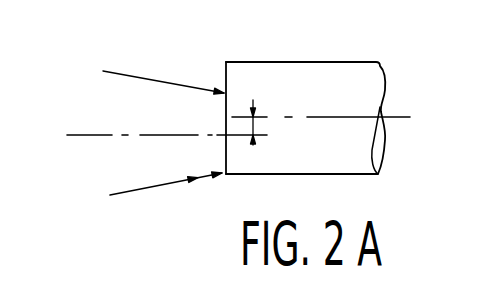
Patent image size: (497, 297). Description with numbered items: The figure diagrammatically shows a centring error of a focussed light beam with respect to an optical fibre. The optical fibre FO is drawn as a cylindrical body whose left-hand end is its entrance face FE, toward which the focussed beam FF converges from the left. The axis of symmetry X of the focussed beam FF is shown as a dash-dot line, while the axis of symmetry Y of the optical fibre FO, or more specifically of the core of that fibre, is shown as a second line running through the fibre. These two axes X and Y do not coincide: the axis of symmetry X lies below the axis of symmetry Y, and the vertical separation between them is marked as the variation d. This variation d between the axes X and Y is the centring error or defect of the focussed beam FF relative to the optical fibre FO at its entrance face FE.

The optical fibre FO is at (323, 67).
The entrance face FE is at (226, 85).
The focussed beam FF is at (168, 183).
The variation between the axes d is at (257, 107).
The axis of symmetry of the focussed beam X is at (166, 119).
The axis of symmetry of the optical fibre Y is at (338, 114).